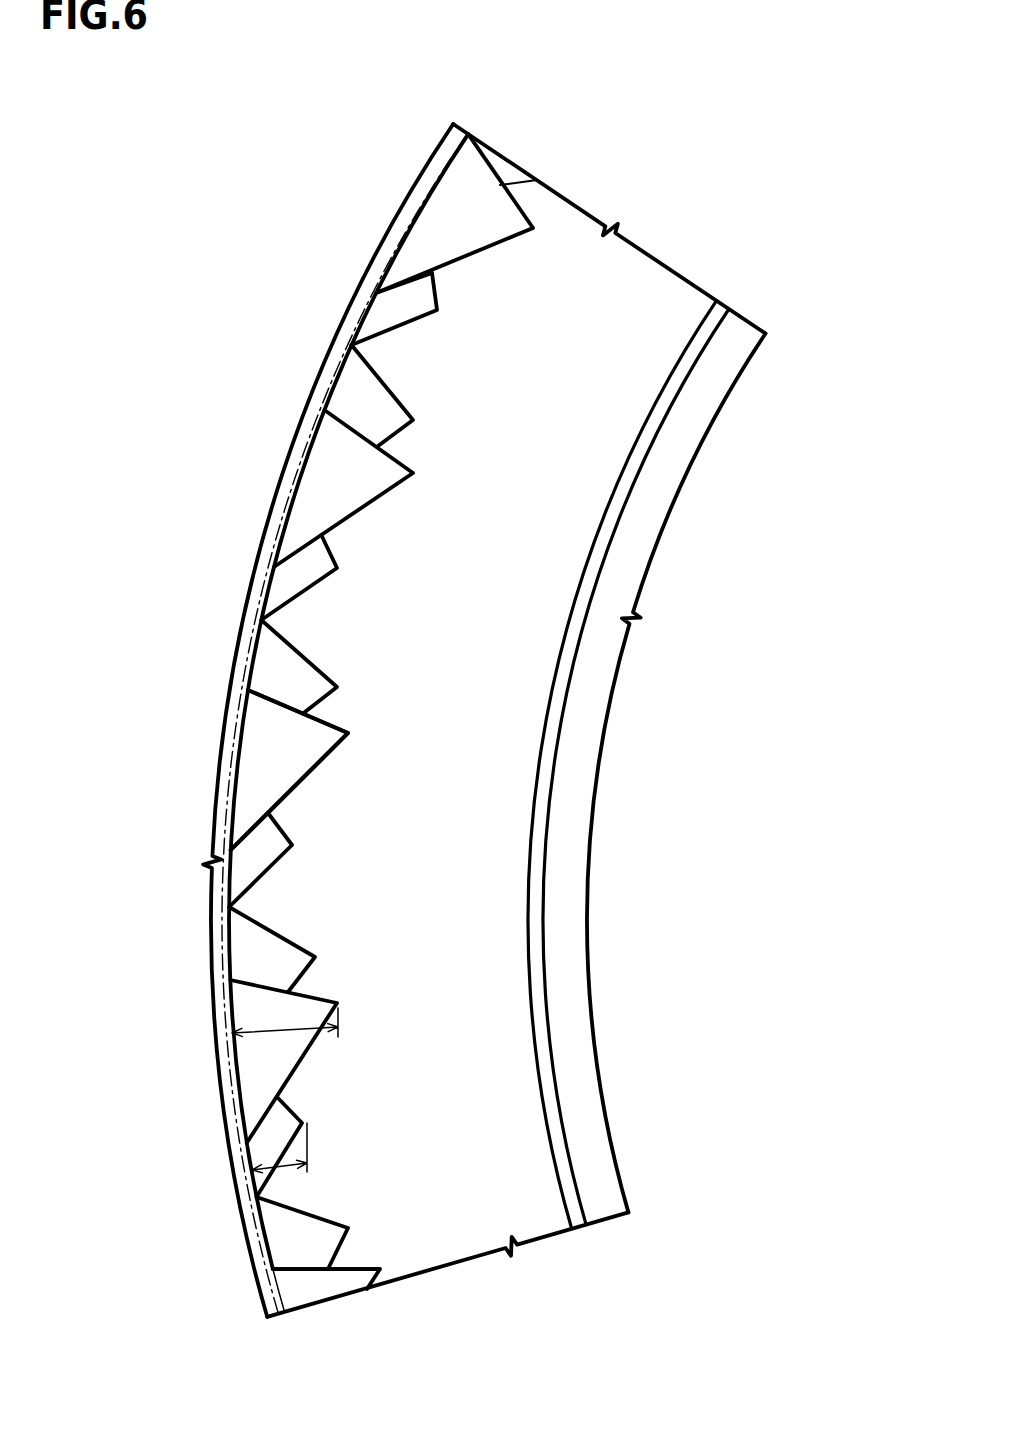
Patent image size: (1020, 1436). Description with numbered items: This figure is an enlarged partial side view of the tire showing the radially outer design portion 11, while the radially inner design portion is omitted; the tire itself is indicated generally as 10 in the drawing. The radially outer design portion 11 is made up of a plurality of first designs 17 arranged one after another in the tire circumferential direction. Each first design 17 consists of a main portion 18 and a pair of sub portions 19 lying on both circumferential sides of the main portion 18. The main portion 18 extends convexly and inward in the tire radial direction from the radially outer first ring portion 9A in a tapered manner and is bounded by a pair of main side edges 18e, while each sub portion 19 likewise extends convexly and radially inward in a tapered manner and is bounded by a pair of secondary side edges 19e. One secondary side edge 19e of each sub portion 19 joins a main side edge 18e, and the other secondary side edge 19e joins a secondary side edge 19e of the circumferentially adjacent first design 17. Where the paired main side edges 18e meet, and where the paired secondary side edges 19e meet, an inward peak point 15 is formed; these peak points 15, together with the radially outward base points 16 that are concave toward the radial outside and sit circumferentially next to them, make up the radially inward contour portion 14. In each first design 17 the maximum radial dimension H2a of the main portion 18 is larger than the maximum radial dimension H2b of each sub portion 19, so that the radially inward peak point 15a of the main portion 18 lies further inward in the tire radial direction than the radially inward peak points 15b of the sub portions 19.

The radially outer first ring portion 9A is at (230, 1113).
The rotor 10 is at (561, 980).
The radially outer design portion 11 is at (254, 559).
The radially inward contour portion 14 is at (402, 402).
The radially inward peak point 15 is at (413, 473).
The radially inward peak point of the main portion 15a is at (348, 733).
The radially inward peak point of the sub portion 15b is at (413, 420).
The radially outward base point 16 is at (361, 346).
The first design 17 is at (291, 453).
The main portion 18 is at (270, 763).
The main side edge 18e is at (330, 723).
The sub portion 19 is at (283, 668).
The secondary side edge 19e is at (283, 830).
The maximum dimension in the tire radial direction of the main portion H2a is at (290, 1032).
The maximum dimension in the tire radial direction of the sub portion H2b is at (280, 1170).